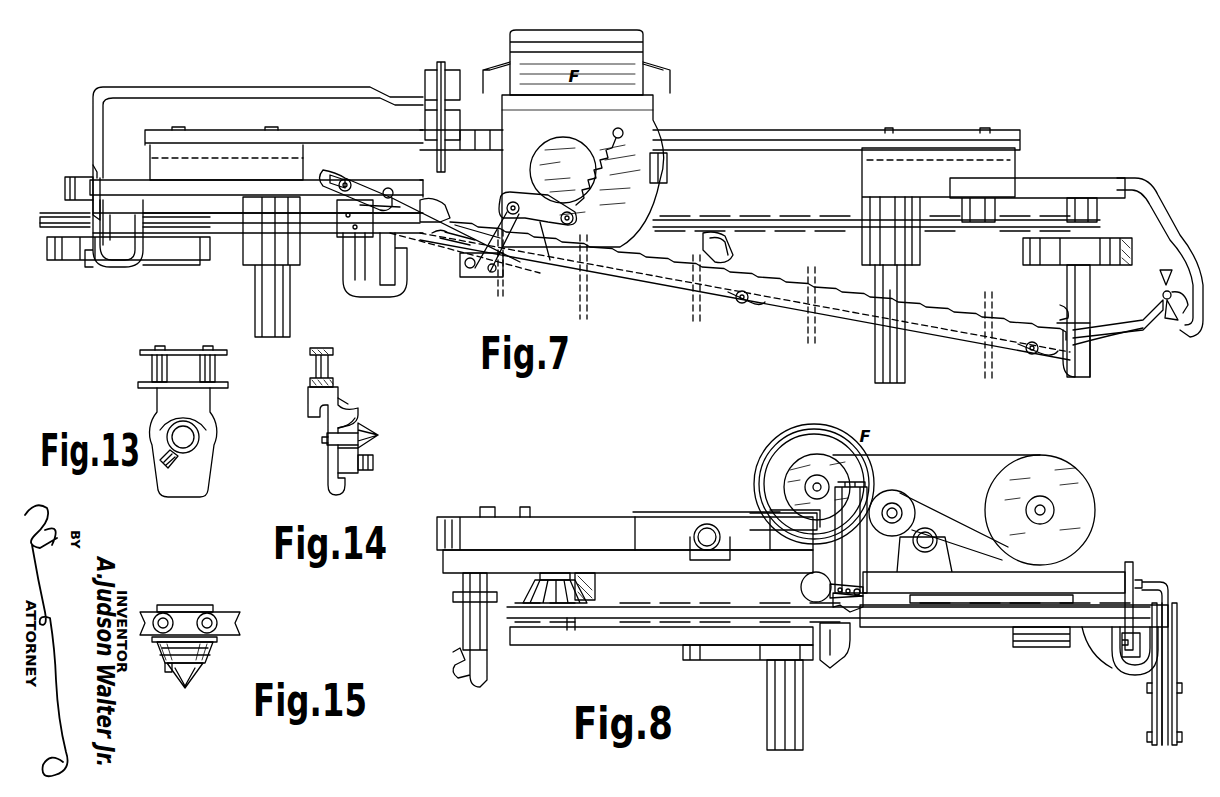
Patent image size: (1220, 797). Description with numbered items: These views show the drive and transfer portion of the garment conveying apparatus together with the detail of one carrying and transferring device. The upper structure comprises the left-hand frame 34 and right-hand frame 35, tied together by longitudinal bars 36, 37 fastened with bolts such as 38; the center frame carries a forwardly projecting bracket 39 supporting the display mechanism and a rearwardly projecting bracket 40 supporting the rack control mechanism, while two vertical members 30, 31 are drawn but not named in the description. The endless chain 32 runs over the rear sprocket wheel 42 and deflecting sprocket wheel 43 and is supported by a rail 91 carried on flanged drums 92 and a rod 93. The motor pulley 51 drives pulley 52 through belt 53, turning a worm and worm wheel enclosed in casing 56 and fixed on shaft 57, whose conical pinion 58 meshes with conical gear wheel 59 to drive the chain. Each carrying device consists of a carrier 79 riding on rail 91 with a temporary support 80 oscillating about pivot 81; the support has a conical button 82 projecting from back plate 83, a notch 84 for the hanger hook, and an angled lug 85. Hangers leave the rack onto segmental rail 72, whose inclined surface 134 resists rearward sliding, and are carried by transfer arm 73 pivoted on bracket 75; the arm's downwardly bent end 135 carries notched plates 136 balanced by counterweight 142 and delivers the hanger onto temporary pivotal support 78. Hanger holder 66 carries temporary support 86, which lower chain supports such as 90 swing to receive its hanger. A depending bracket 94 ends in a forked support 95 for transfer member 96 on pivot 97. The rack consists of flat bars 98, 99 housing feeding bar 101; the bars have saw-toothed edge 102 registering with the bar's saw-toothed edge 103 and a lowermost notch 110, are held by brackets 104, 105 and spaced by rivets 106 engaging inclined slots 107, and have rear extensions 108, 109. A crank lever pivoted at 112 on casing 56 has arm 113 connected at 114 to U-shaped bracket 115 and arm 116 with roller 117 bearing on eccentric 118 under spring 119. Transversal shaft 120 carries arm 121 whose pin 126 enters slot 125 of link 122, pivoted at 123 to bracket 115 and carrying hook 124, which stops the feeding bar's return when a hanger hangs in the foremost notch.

In FIG. 7, the post 30 is at (290, 325).
In FIG. 7, the post 31 is at (905, 368).
In FIG. 8, the post 31 is at (803, 712).
In FIG. 7, the endless chain 32 is at (765, 218).
In FIG. 8, the endless chain 32 is at (640, 612).
In FIG. 13, the endless chain 32 is at (162, 350).
In FIG. 15, the endless chain 32 is at (235, 623).
In FIG. 7, the left-hand frame 34 is at (862, 185).
In FIG. 7, the right-hand frame 35 is at (425, 190).
In FIG. 8, the right-hand frame 35 is at (947, 583).
In FIG. 7, the longitudinal bar 36 is at (748, 132).
In FIG. 8, the longitudinal bar 36 is at (932, 530).
In FIG. 8, the longitudinal bar 37 is at (692, 536).
In FIG. 7, the bolt 38 is at (983, 128).
In FIG. 8, the forwardly projecting bracket 39 is at (448, 517).
In FIG. 7, the rearwardly projecting bracket 40 is at (668, 178).
In FIG. 7, the rear sprocket wheel 42 is at (1070, 222).
In FIG. 7, the deflecting sprocket wheel 43 is at (992, 222).
In FIG. 7, the pulley 51 is at (452, 62).
In FIG. 7, the pulley 52 is at (437, 67).
In FIG. 8, the pulley 52 is at (1085, 490).
In FIG. 8, the belt 53 is at (925, 455).
In FIG. 7, the casing 56 is at (648, 205).
In FIG. 8, the casing 56 is at (1040, 647).
In FIG. 7, the shaft 57 is at (563, 170).
In FIG. 8, the conical pinion 58 is at (597, 590).
In FIG. 8, the conical gear wheel 59 is at (533, 598).
In FIG. 8, the hanger holder 66 is at (463, 615).
In FIG. 7, the segmental rail 72 is at (240, 233).
In FIG. 8, the segmental rail 72 is at (995, 627).
In FIG. 7, the transfer arm 73 is at (212, 88).
In FIG. 8, the transfer arm 73 is at (868, 497).
In FIG. 8, the bracket 75 is at (672, 512).
In FIG. 7, the temporary pivotal support 78 is at (93, 267).
In FIG. 8, the temporary pivotal support 78 is at (845, 665).
In FIG. 13, the carrier 79 is at (212, 412).
In FIG. 14, the carrier 79 is at (342, 402).
In FIG. 15, the carrier 79 is at (180, 605).
In FIG. 14, the temporary support 80 is at (352, 408).
In FIG. 14, the pivot 81 is at (324, 441).
In FIG. 13, the conical button 82 is at (200, 440).
In FIG. 14, the conical button 82 is at (380, 435).
In FIG. 15, the conical button 82 is at (188, 680).
In FIG. 14, the back plate 83 is at (335, 447).
In FIG. 15, the back plate 83 is at (217, 640).
In FIG. 14, the notch 84 is at (358, 422).
In FIG. 15, the notch 84 is at (205, 660).
In FIG. 13, the lug 85 is at (160, 466).
In FIG. 14, the lug 85 is at (373, 462).
In FIG. 15, the lug 85 is at (166, 673).
In FIG. 8, the temporary support 86 is at (480, 687).
In FIG. 7, the temporary support 90 is at (1166, 270).
In FIG. 7, the rail 91 is at (195, 258).
In FIG. 8, the rail 91 is at (635, 645).
In FIG. 7, the flanged drum 92 is at (157, 258).
In FIG. 8, the flanged drum 92 is at (735, 660).
In FIG. 8, the rod 93 is at (567, 630).
In FIG. 7, the depending bracket 94 is at (1158, 215).
In FIG. 7, the forked support 95 is at (1183, 312).
In FIG. 7, the transfer member 96 is at (1175, 322).
In FIG. 7, the pivot 97 is at (1166, 300).
In FIG. 7, the flat bar 98 is at (850, 318).
In FIG. 8, the flat bar 98 is at (1172, 745).
In FIG. 8, the flat bar 99 is at (1152, 745).
In FIG. 8, the feeding bar 101 is at (1162, 747).
In FIG. 7, the saw-toothed edge 102 is at (922, 300).
In FIG. 7, the saw-toothed edge 103 is at (966, 312).
In FIG. 7, the bracket 104 is at (1067, 280).
In FIG. 7, the bracket 105 is at (400, 297).
In FIG. 7, the spacing rivet 106 is at (738, 305).
In FIG. 7, the inclined slot 107 is at (735, 290).
In FIG. 7, the upwardly inclined extension 108 is at (1112, 345).
In FIG. 7, the upwardly inclined extension 109 is at (1145, 318).
In FIG. 7, the lowermost notch 110 is at (1049, 306).
In FIG. 7, the pivot 112 is at (514, 215).
In FIG. 7, the arm 113 is at (495, 255).
In FIG. 7, the pivotal connection 114 is at (488, 270).
In FIG. 7, the U-shaped bracket 115 is at (496, 272).
In FIG. 8, the U-shaped bracket 115 is at (1130, 658).
In FIG. 7, the arm 116 is at (548, 225).
In FIG. 7, the roller 117 is at (573, 222).
In FIG. 7, the eccentric 118 is at (548, 142).
In FIG. 7, the spring 119 is at (612, 132).
In FIG. 8, the transversal shaft 120 is at (955, 610).
In FIG. 7, the arm 121 is at (386, 190).
In FIG. 7, the link 122 is at (358, 206).
In FIG. 8, the link 122 is at (1130, 562).
In FIG. 7, the pivotal connection 123 is at (460, 268).
In FIG. 7, the hook 124 is at (445, 207).
In FIG. 7, the slot 125 is at (330, 178).
In FIG. 7, the pin 126 is at (345, 178).
In FIG. 7, the upwardly inclined surface 134 is at (345, 220).
In FIG. 7, the downwardly bent end 135 is at (93, 128).
In FIG. 8, the notched plate 136 is at (866, 600).
In FIG. 7, the counterweight 142 is at (80, 177).
In FIG. 8, the counterweight 142 is at (813, 578).